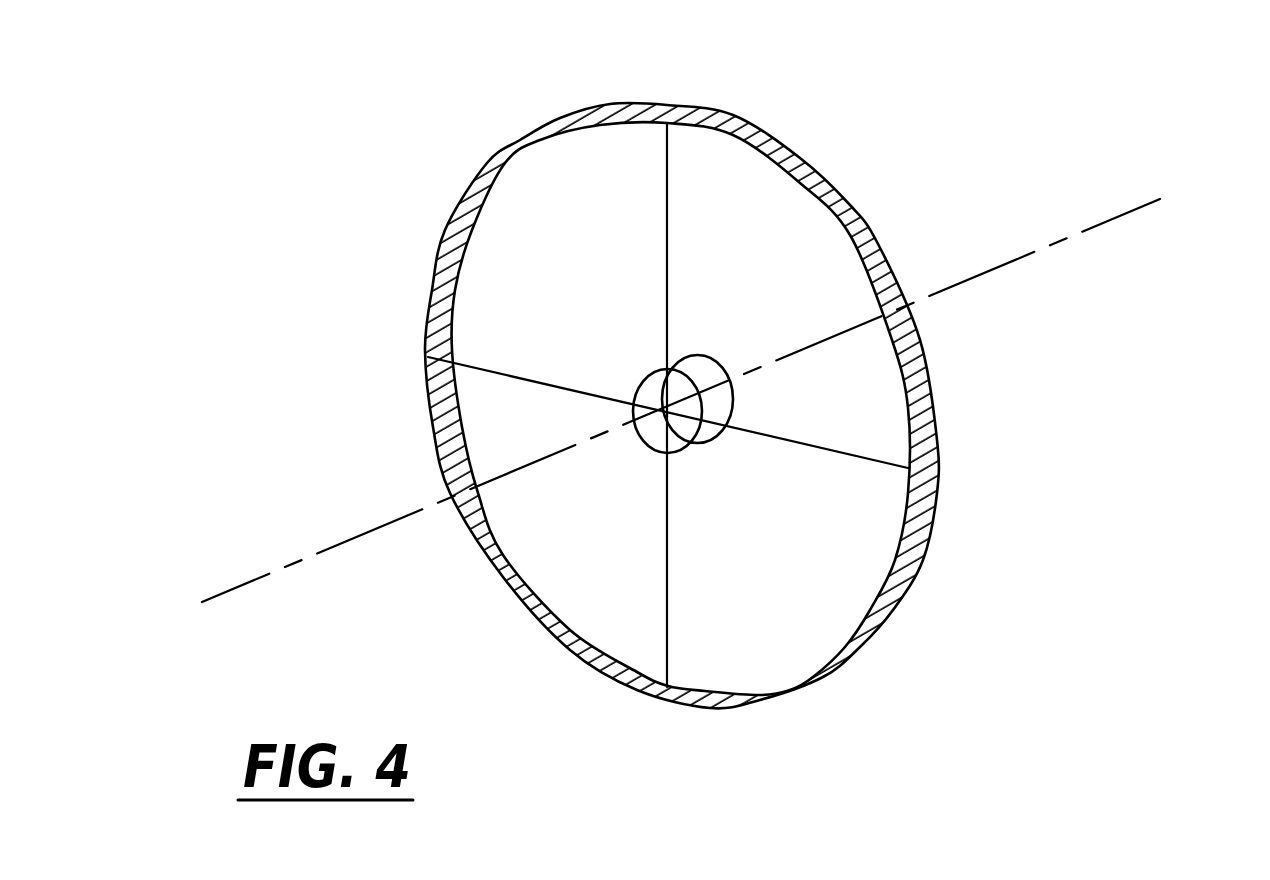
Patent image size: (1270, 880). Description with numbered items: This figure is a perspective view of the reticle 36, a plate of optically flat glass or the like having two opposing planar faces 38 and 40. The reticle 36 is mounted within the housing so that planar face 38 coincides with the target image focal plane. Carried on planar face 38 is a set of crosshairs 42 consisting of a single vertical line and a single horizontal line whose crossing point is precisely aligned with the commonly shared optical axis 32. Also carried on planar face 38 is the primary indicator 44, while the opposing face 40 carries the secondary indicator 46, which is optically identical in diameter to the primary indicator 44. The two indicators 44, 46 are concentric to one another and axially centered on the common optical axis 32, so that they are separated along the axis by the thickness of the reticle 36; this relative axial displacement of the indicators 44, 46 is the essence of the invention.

The commonly shared optical axis 32 is at (364, 530).
The reticle 36 is at (497, 115).
The planar face 38 is at (902, 408).
The opposing planar face 40 is at (940, 428).
The crosshairs 42 is at (538, 380).
The primary indicator 44 is at (685, 453).
The secondary indicator 46 is at (695, 355).